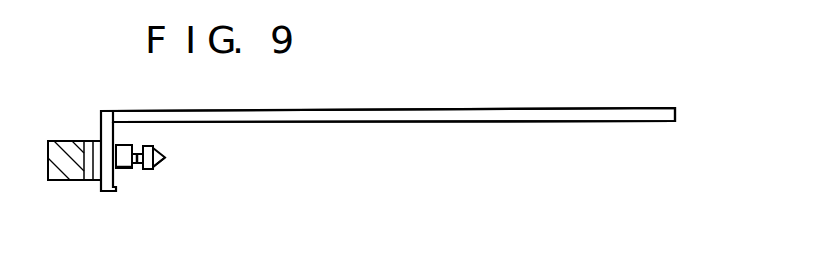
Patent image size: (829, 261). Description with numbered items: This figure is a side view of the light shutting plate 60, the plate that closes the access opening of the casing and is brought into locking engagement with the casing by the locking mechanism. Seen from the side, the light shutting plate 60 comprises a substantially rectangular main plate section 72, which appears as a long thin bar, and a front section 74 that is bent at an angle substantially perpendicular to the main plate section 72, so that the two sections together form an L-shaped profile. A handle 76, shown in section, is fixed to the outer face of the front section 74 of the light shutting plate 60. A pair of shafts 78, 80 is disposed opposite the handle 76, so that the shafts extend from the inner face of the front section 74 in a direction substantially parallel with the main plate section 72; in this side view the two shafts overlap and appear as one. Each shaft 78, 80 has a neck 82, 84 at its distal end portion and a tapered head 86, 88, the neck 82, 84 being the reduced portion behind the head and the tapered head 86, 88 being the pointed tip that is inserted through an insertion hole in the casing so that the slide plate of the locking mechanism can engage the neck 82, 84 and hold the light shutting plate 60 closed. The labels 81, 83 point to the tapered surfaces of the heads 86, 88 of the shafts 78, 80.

The light shutting plate 60 is at (562, 89).
The main plate section 72 is at (472, 110).
The front section 74 is at (105, 192).
The handle 76 is at (60, 181).
The shaft 78 is at (178, 149).
The shaft 80 is at (127, 152).
The cone face 81 is at (204, 189).
The cone face 83 is at (163, 173).
The neck 82 is at (151, 188).
The neck 84 is at (139, 166).
The tapered head 86 is at (199, 163).
The tapered head 88 is at (165, 160).